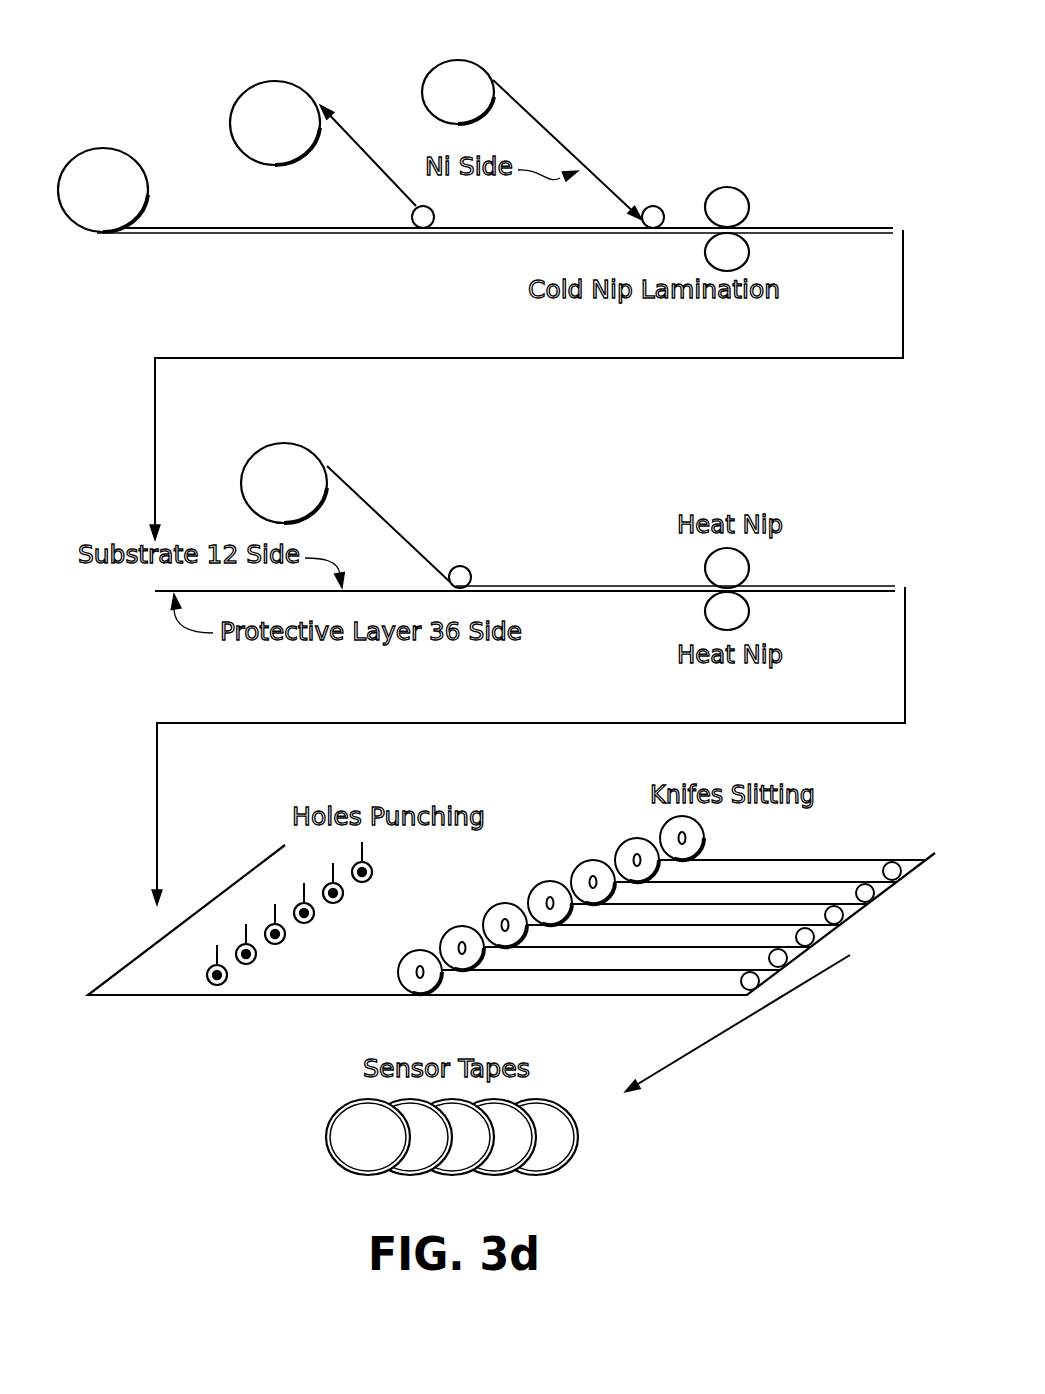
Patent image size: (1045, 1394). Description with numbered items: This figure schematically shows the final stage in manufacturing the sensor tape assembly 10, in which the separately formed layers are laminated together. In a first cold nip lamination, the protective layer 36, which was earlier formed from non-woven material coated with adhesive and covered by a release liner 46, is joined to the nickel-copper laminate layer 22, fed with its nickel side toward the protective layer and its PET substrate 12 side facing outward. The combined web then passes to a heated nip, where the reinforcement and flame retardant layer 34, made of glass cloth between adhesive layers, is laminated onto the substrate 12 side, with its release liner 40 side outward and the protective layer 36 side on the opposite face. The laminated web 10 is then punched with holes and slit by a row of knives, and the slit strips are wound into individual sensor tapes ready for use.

The sensor tape assembly 10 is at (175, 1000).
The PET substrate 12 is at (575, 138).
The nickel-copper laminate layer 22 is at (638, 133).
The reinforcement and flame retardant layer 34 is at (434, 509).
The protective layer 36 is at (158, 236).
The release liner 40 is at (401, 521).
The release liner 46 is at (351, 132).